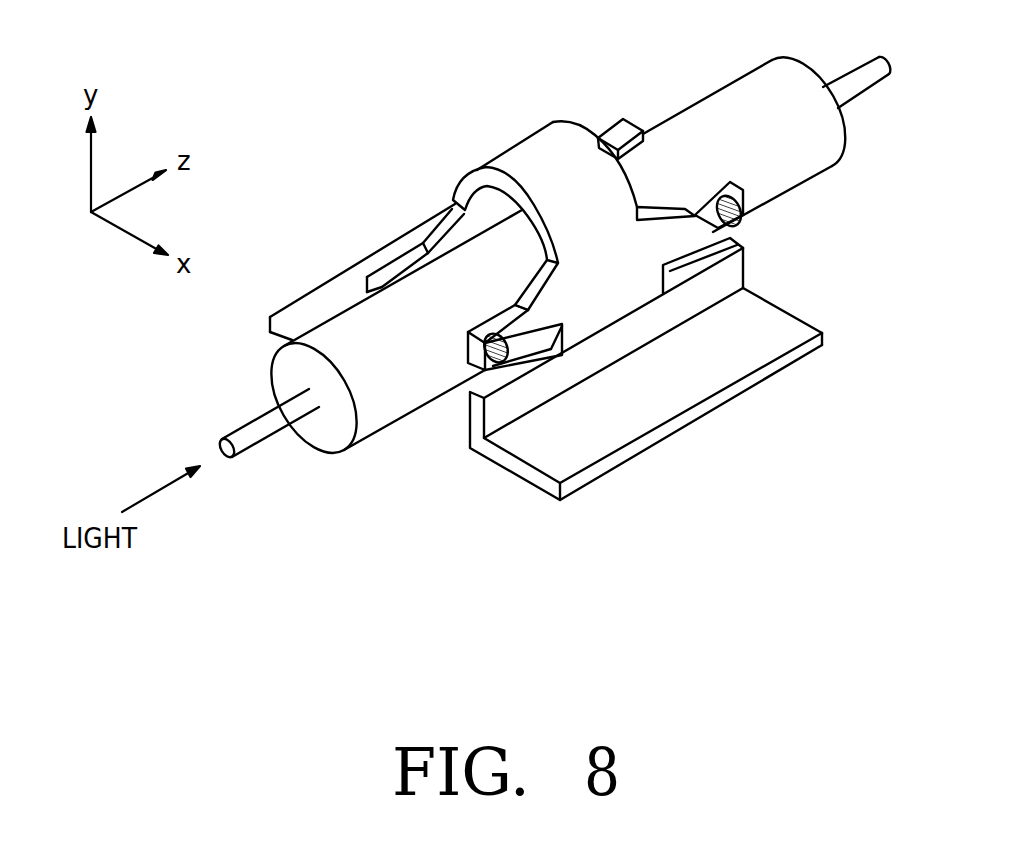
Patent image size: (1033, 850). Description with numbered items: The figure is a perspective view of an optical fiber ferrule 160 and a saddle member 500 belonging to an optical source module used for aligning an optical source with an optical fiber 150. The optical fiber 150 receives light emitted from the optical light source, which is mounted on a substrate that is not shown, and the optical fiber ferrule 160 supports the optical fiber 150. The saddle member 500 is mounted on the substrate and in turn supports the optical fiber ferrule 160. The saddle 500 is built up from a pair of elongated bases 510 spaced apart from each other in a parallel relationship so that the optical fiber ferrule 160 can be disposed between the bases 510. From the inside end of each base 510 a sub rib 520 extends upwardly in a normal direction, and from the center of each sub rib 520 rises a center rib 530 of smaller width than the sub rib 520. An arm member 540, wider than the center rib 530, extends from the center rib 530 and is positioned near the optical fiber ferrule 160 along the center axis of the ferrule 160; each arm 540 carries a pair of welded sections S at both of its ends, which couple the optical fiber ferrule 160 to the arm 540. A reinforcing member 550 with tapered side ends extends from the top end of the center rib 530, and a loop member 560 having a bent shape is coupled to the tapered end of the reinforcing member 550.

The optical fiber 150 is at (248, 433).
The optical fiber ferrule 160 is at (318, 435).
The saddle member 500 is at (498, 127).
The elongated bases 510 is at (310, 313).
The sub rib 520 is at (733, 290).
The center rib 530 is at (615, 320).
The arm member 540 is at (690, 230).
The reinforcing member 550 is at (660, 237).
The loop member 560 is at (570, 147).
The welded sections S is at (497, 368).